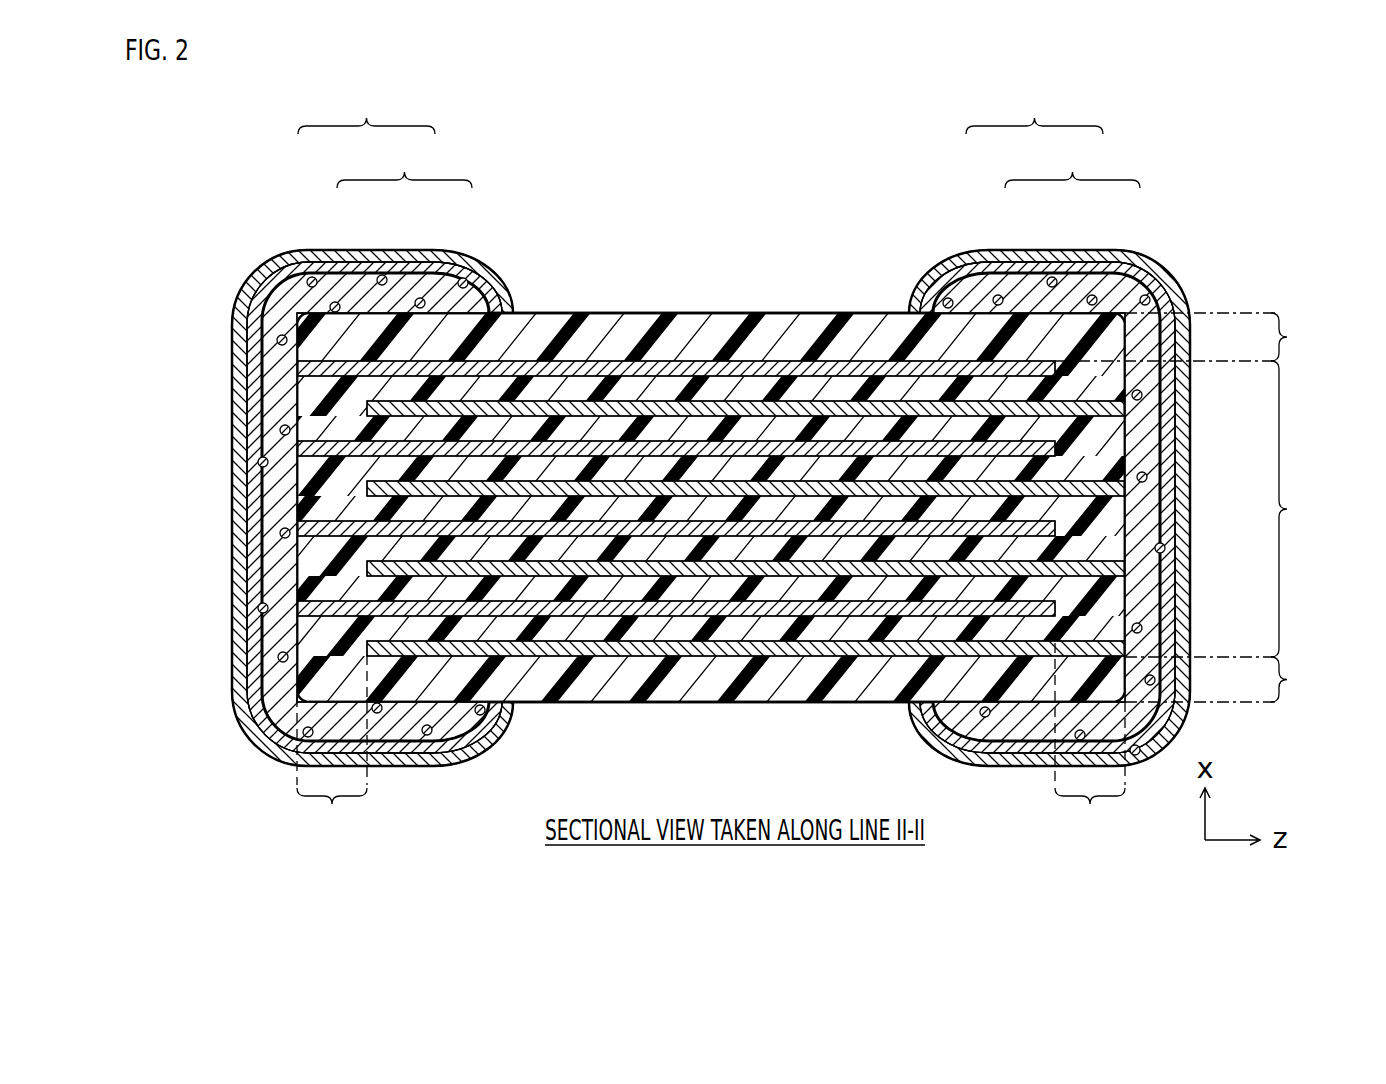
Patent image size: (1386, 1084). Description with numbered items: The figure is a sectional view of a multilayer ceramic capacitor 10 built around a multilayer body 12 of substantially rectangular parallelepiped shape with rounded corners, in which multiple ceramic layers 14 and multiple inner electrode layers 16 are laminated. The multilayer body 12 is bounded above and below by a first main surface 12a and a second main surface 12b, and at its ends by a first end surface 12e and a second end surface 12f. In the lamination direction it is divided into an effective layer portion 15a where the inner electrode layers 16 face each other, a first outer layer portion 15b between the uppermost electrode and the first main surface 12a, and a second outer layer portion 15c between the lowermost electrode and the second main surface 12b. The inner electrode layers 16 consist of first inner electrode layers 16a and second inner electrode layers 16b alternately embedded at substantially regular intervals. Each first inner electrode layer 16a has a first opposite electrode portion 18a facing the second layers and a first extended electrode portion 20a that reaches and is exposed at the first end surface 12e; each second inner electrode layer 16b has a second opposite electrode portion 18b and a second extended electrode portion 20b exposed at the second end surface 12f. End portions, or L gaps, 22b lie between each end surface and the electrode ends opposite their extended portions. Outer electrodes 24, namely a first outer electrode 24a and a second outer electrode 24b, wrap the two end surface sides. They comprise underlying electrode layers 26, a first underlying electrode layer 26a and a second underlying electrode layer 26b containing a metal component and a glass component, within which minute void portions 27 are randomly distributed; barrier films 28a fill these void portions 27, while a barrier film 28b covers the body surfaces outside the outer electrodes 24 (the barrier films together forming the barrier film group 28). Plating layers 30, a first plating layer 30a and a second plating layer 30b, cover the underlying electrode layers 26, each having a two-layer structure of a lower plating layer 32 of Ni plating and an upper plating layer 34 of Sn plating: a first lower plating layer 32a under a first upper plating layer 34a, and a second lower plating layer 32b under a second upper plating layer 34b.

The multilayer ceramic capacitor 10 is at (175, 244).
The multilayer body 12 is at (711, 500).
The first main surface 12a is at (872, 313).
The second main surface 12b is at (828, 703).
The first end surface 12e is at (297, 505).
The second end surface 12f is at (1128, 375).
The ceramic layers 14 is at (826, 462).
The effective layer portion 15a is at (1305, 509).
The first outer layer portion 15b is at (1197, 337).
The second outer layer portion 15c is at (1232, 679).
The inner electrode layers 16 is at (240, 882).
The first inner electrode layers 16a is at (515, 365).
The second inner electrode layers 16b is at (585, 405).
The first opposite electrode portions 18a is at (668, 448).
The second opposite electrode portions 18b is at (703, 410).
The first extended electrode portions 20a is at (300, 370).
The second extended electrode portions 20b is at (1118, 490).
The end portions (L gaps) 22b is at (711, 742).
The outer electrodes 24 is at (377, 882).
The first outer electrode 24a is at (372, 423).
The second outer electrode 24b is at (1049, 423).
The underlying electrode layers 26 is at (510, 882).
The first underlying electrode layer 26a is at (338, 290).
The second underlying electrode layer 26b is at (1046, 507).
The void portions 27 is at (278, 343).
The glass component 28 is at (650, 882).
The barrier films 28a is at (279, 337).
The barrier film 28b is at (837, 312).
The plating layers 30 is at (785, 882).
The first plating layer 30a is at (372, 448).
The second plating layer 30b is at (1049, 508).
The lower plating layer 32 is at (923, 882).
The first lower plating layer 32a is at (375, 266).
The second lower plating layer 32b is at (1047, 507).
The upper plating layer 34 is at (1058, 882).
The first upper plating layer 34a is at (437, 255).
The second upper plating layer 34b is at (988, 290).